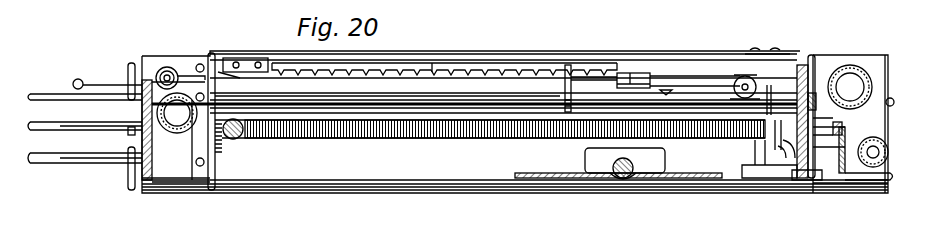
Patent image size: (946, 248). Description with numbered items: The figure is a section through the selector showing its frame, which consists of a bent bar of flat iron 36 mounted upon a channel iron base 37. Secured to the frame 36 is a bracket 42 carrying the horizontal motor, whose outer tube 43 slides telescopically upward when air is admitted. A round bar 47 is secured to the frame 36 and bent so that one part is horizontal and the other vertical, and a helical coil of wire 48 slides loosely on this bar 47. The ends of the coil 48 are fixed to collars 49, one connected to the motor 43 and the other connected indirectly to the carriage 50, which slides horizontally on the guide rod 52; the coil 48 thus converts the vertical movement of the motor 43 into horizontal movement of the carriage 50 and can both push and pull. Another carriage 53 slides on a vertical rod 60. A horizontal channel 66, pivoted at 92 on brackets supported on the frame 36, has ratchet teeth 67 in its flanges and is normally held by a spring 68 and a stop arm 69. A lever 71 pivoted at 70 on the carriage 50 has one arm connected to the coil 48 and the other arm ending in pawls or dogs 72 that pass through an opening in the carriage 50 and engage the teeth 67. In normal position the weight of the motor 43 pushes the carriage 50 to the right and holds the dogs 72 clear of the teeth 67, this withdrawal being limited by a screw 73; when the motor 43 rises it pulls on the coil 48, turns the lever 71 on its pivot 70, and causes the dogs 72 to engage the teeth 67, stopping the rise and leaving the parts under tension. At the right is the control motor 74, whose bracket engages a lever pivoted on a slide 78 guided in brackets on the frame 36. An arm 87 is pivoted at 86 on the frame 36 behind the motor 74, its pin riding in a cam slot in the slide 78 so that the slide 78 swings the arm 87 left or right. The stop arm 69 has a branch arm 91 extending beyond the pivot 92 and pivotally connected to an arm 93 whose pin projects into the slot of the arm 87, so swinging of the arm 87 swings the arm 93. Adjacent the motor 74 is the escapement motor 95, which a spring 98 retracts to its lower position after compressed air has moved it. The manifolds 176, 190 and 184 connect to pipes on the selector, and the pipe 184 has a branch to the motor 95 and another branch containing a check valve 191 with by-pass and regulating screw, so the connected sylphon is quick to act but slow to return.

The bar of flat iron 36 is at (138, 170).
The channel iron base 37 is at (233, 190).
The bracket 42 is at (140, 90).
The outer tube 43 is at (178, 118).
The round bar 47 is at (236, 140).
The helical coil of wire 48 is at (343, 140).
The collars 49 is at (770, 153).
The carriage 50 is at (565, 77).
The guide rod 52 is at (342, 102).
The carriage 53 is at (640, 157).
The vertical rod 60 is at (620, 192).
The horizontal channel 66 is at (488, 55).
The ratchet teeth 67 is at (435, 65).
The spring 68 is at (220, 157).
The stop arm 69 is at (815, 88).
The pivot 70 is at (747, 87).
The lever 71 is at (650, 77).
The pawls or dogs 72 is at (617, 70).
The screw 73 is at (673, 78).
The motor 74 is at (880, 152).
The slide 78 is at (845, 137).
The pivot 86 is at (877, 120).
The arm 87 is at (875, 60).
The branch arm 91 is at (818, 92).
The pivot 92 is at (220, 75).
The arm 93 is at (853, 83).
The motor 95 is at (853, 85).
The spring 98 is at (894, 101).
The manifold 176 is at (28, 141).
The manifold 184 is at (24, 78).
The manifold 190 is at (28, 112).
The check valve 191 is at (204, 60).